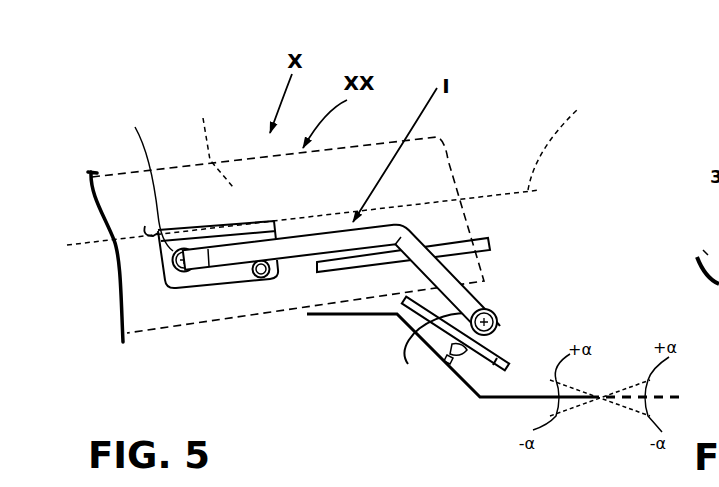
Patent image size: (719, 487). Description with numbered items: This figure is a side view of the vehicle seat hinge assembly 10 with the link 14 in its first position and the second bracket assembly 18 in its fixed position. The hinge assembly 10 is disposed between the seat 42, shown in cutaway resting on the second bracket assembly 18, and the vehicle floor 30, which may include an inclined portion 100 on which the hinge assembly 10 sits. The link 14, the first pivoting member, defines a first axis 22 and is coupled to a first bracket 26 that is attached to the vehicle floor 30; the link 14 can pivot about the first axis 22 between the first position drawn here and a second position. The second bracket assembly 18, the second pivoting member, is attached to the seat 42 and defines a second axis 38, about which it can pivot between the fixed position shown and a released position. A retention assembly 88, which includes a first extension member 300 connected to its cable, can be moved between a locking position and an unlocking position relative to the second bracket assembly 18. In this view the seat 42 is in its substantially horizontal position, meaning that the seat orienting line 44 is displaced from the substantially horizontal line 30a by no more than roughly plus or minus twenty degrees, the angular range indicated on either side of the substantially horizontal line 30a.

The vehicle seat hinge assembly 10 is at (478, 186).
The link 14 is at (443, 280).
The second bracket assembly 18 is at (193, 302).
The first axis 22 is at (418, 322).
The first bracket 26 is at (500, 357).
The vehicle floor 30 is at (483, 403).
The substantially horizontal line 30a is at (673, 397).
The second axis 38 is at (140, 176).
The seat 42 is at (212, 140).
The seat orienting line 44 is at (333, 166).
The retention assembly 88 is at (303, 275).
The inclined portion 100 is at (448, 352).
The first extension member 300 is at (262, 280).